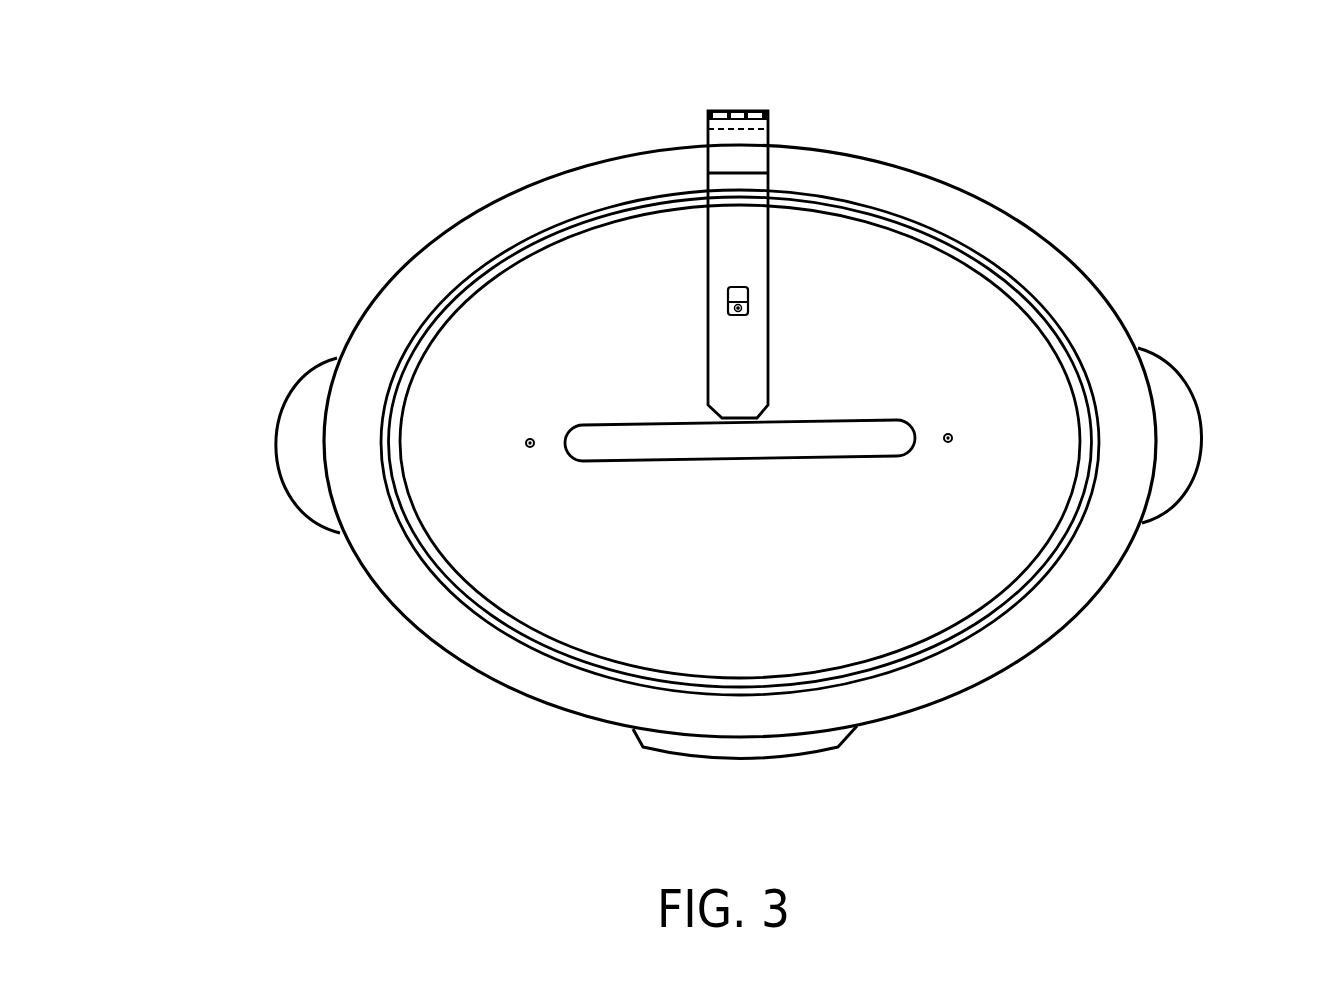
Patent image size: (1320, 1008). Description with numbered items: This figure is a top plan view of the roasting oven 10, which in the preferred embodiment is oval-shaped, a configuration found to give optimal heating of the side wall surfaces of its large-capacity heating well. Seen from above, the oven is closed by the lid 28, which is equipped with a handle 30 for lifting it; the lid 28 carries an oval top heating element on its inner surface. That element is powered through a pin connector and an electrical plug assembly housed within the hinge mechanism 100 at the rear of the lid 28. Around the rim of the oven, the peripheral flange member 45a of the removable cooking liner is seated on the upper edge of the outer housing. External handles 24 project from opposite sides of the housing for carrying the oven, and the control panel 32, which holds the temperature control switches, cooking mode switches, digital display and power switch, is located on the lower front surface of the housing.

The roasting oven 10 is at (972, 112).
The hinge mechanism 100 is at (626, 131).
The peripheral flange member 45a is at (997, 205).
The lid 28 is at (880, 568).
The external handles 24 is at (288, 465).
The handle 30 is at (640, 446).
The control panel 32 is at (837, 748).